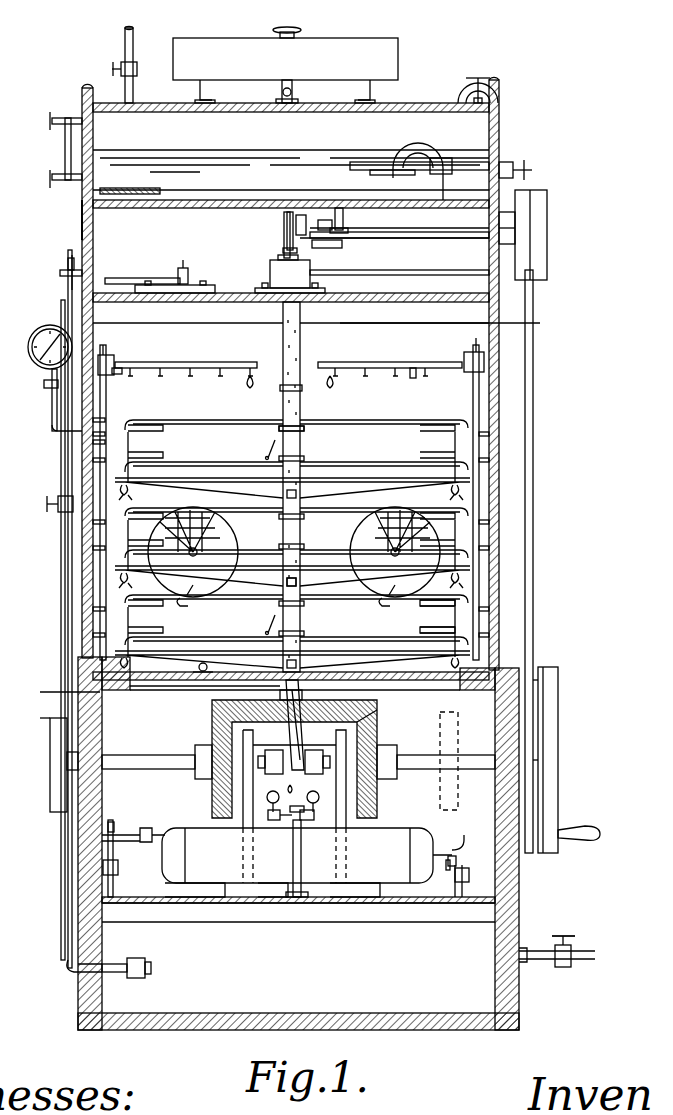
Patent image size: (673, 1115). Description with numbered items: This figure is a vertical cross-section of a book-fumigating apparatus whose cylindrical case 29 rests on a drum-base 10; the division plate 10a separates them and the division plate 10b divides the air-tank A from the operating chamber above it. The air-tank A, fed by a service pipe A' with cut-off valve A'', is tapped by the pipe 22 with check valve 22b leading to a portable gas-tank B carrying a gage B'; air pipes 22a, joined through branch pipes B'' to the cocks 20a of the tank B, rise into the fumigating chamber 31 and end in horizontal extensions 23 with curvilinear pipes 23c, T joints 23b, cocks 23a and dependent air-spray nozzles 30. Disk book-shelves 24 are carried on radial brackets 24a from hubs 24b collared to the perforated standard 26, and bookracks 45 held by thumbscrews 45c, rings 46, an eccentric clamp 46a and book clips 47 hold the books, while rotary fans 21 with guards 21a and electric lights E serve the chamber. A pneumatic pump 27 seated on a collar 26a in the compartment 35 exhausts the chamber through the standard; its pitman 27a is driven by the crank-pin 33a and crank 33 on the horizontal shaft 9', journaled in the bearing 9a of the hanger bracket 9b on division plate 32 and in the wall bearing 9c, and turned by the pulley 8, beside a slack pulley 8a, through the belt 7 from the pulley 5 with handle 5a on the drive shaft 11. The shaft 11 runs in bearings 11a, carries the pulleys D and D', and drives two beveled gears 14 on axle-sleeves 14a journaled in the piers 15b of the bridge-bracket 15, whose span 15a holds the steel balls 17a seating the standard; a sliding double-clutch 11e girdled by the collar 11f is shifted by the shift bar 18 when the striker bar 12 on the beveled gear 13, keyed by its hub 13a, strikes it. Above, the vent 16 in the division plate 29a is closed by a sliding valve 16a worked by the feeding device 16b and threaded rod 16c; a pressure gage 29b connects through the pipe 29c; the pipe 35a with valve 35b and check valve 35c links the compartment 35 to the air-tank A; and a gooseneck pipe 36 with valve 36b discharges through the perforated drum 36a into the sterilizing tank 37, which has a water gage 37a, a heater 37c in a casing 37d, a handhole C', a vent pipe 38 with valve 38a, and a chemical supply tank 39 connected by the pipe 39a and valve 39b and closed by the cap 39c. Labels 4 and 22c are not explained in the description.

The partition / guide line 4 is at (291, 506).
The pulley 5 is at (558, 676).
The handle 5a is at (586, 826).
The belt 7 is at (533, 375).
The pulley 8 is at (519, 203).
The loose pulley 8a is at (542, 205).
The horizontal shaft 9' is at (394, 252).
The bearing 9a is at (332, 226).
The hanger bracket 9b is at (343, 208).
The bearing 9c is at (489, 226).
The drum-base 10 is at (80, 995).
The division plate 10a is at (430, 684).
The division plate 10b is at (360, 903).
The horizontal drive shaft 11 is at (440, 766).
The bearings 11a is at (112, 762).
The sliding double-clutch 11e is at (273, 795).
The collar 11f is at (305, 752).
The striker bar 12 is at (280, 693).
The beveled gear 13 is at (375, 680).
The hub 13a is at (302, 695).
The vertical beveled gears 14 is at (377, 740).
The axle-sleeves 14a is at (198, 755).
The bridge-bracket 15 is at (245, 905).
The horizontal span 15a is at (232, 722).
The piers 15b is at (247, 820).
The vent 16 is at (185, 302).
The sliding valve 16a is at (183, 266).
The feeding device 16b is at (60, 272).
The threaded rod 16c is at (112, 278).
The steel balls 17a is at (380, 707).
The shift bar 18 is at (199, 663).
The cocks 20a is at (146, 828).
The rotary fans 21 is at (215, 530).
The drum-shaped guards 21a is at (365, 512).
The pipe 22 is at (294, 870).
The air pipes 22a is at (473, 392).
The check valve 22b is at (306, 822).
The valve 22c is at (274, 820).
The horizontal extension pipes 23 is at (204, 362).
The valves 23a is at (118, 374).
The T joints 23b is at (114, 358).
The curvilinear extension pipes 23c is at (412, 378).
The book-shelves 24 is at (372, 478).
The radial brackets 24a is at (240, 490).
The collar or hub 24b is at (298, 586).
The standard 26 is at (283, 326).
The collar 26a is at (262, 288).
The pneumatic pump 27 is at (305, 270).
The pitman 27a is at (283, 244).
The cylindrical case 29 is at (82, 207).
The division plate 29a is at (398, 302).
The pressure gage 29b is at (40, 330).
The pipe 29c is at (50, 400).
The air-spray nozzles 30 is at (108, 418).
The fumigating chamber 31 is at (291, 315).
The division plate 32 is at (399, 224).
The crank 33 is at (292, 212).
The crank-pin 33a is at (287, 222).
The compartment 35 is at (432, 270).
The pipe 35a is at (61, 870).
The valve 35b is at (47, 504).
The check valve 35c is at (138, 958).
The gooseneck pipe 36 is at (425, 145).
The perforated plate or drum 36a is at (380, 170).
The valve 36b is at (508, 162).
The sterilizing tank 37 is at (290, 112).
The water gage 37a is at (64, 160).
The electric heater 37c is at (120, 186).
The water-proof casing 37d is at (205, 208).
The vent pipe 38 is at (133, 35).
The valve 38a is at (120, 66).
The chemical supply tank 39 is at (285, 70).
The pipe 39a is at (287, 110).
The valve 39b is at (277, 104).
The neck and cap 39c is at (300, 27).
The bookrack 45 is at (228, 420).
The thumbscrew 45c is at (195, 688).
The rings 46 is at (304, 446).
The eccentric clamp 46a is at (262, 452).
The book clips 47 is at (422, 612).
The air-tank A is at (298, 969).
The service pipe A' is at (557, 967).
The cut-off valve A'' is at (582, 920).
The portable gas-tank B is at (297, 862).
The gage B' is at (315, 794).
The branch pipes B'' is at (451, 856).
The handhole C' is at (478, 77).
The pulley D is at (43, 765).
The pulley D' is at (435, 765).
The electric lights E is at (319, 503).